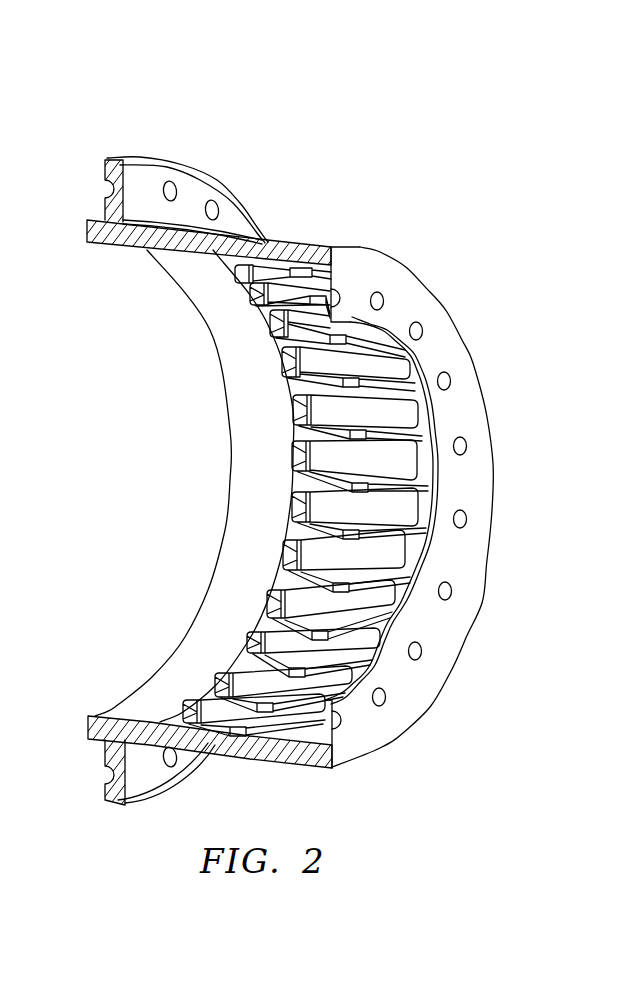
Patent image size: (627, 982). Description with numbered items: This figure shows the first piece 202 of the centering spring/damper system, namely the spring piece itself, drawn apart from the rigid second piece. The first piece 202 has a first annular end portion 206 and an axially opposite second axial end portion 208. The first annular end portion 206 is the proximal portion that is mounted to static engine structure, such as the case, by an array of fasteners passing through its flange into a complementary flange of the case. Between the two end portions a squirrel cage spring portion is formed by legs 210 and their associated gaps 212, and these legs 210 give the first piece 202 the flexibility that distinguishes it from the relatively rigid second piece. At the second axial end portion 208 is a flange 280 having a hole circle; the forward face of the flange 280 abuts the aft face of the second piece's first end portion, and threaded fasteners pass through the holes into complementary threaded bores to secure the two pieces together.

The first piece 202 is at (460, 484).
The first annular end portion 206 is at (166, 148).
The second axial end portion 208 is at (478, 502).
The legs 210 is at (408, 492).
The gaps 212 is at (368, 461).
The flange 280 is at (326, 736).